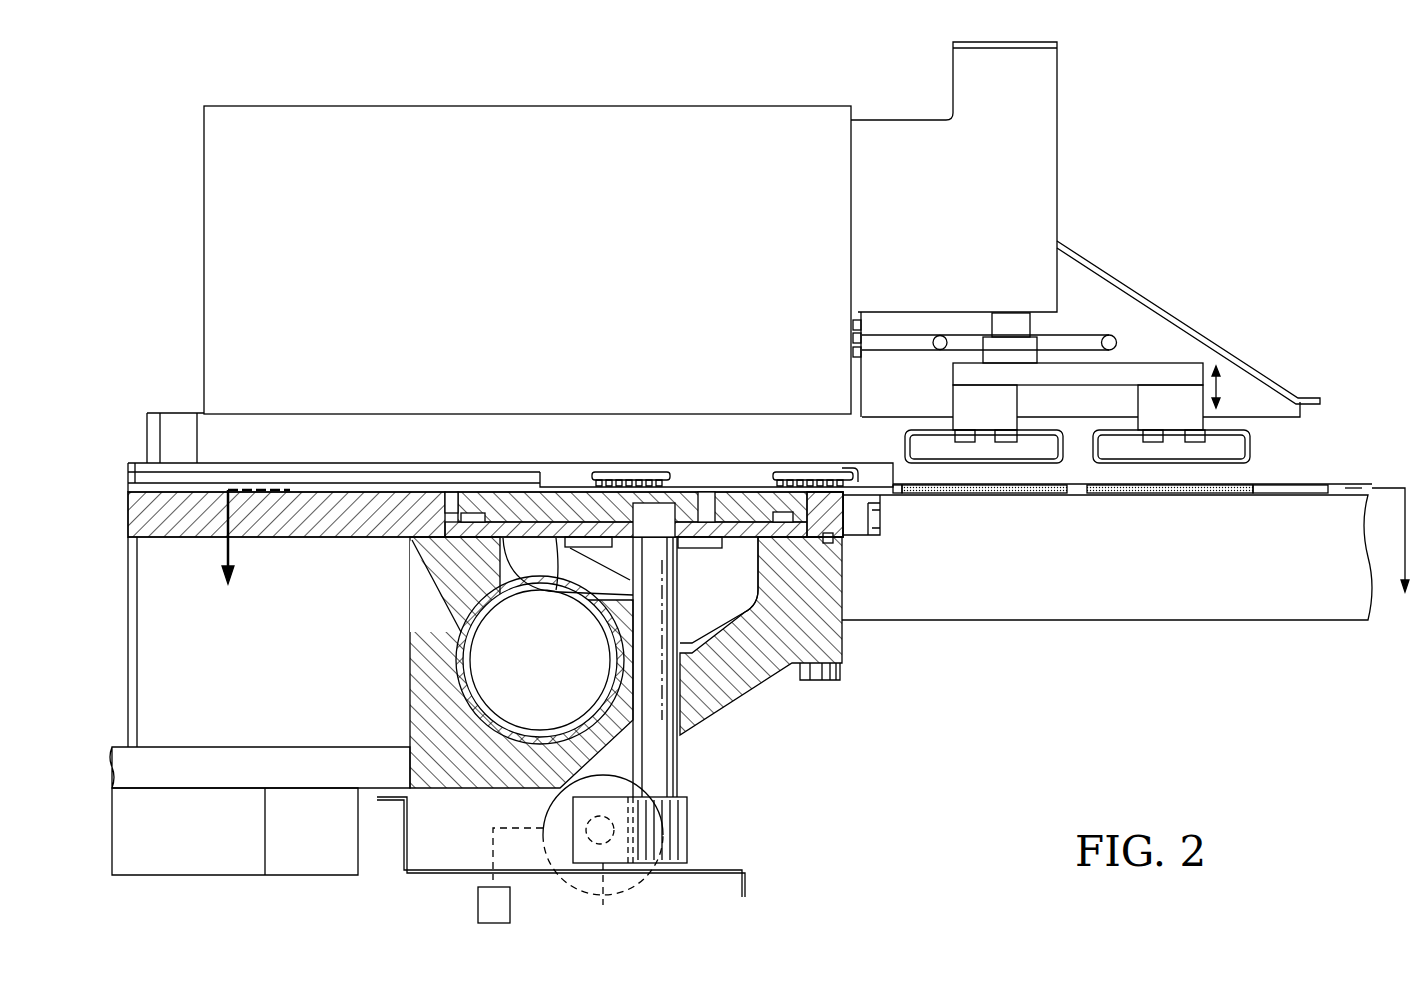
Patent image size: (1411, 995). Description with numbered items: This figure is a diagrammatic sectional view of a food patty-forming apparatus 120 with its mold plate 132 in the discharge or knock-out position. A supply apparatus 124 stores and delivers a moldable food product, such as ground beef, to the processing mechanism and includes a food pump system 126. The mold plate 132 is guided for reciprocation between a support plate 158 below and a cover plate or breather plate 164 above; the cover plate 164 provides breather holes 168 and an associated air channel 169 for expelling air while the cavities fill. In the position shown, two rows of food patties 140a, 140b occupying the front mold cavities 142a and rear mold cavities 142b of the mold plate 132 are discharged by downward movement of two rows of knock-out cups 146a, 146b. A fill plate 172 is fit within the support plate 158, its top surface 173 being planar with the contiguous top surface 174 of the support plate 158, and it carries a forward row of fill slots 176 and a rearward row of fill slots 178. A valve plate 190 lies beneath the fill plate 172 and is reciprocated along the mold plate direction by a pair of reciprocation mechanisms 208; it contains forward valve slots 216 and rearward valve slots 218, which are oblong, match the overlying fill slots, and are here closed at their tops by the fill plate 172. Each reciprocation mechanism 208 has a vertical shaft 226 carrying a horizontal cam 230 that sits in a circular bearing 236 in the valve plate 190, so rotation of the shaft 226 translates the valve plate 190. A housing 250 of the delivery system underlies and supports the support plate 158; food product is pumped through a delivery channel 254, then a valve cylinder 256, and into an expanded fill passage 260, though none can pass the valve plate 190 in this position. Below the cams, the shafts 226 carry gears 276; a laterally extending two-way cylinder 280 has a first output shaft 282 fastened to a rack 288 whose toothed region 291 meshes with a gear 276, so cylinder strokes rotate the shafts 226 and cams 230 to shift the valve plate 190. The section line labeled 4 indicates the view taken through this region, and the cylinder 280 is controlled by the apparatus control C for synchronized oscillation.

The food patty-forming apparatus 120 is at (1090, 181).
The supply apparatus 124 is at (148, 572).
The food pump system 126 is at (485, 797).
The mold plate 132 is at (1315, 483).
The food patties 140a is at (1160, 495).
The food patties 140b is at (958, 495).
The front mold cavities 142a is at (1248, 494).
The rear mold cavities 142b is at (910, 495).
The knock-out cups 146a is at (1258, 464).
The knock-out cups 146b is at (1068, 464).
The support plate 158 is at (318, 540).
The cover plate or breather plate 164 is at (355, 466).
The breather holes 168 is at (618, 474).
The air channel 169 is at (540, 470).
The fill plate 172 is at (446, 508).
The top surface 173 is at (500, 500).
The top surface 174 is at (428, 495).
The fill slots 176 is at (707, 510).
The fill slots 178 is at (530, 520).
The valve plate 190 is at (503, 576).
The reciprocation mechanisms 208 is at (685, 751).
The forward valve slots 216 is at (735, 540).
The rearward valve slots 218 is at (515, 545).
The shaft 226 is at (672, 738).
The cam 230 is at (668, 553).
The circular bearing 236 is at (606, 545).
The housing 250 is at (843, 647).
The delivery channel 254 is at (245, 707).
The valve cylinder 256 is at (436, 712).
The fill passage 260 is at (732, 665).
The gears 276 is at (690, 851).
The two-way cylinder 280 is at (552, 859).
The first output shaft 282 is at (607, 873).
The rack 288 is at (630, 873).
The toothed region 291 is at (690, 821).
The section line 4 is at (247, 542).